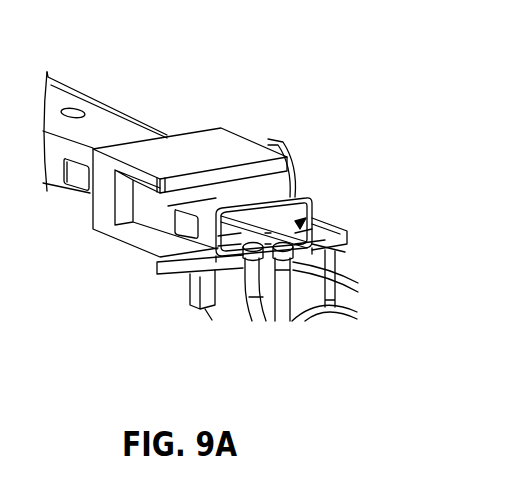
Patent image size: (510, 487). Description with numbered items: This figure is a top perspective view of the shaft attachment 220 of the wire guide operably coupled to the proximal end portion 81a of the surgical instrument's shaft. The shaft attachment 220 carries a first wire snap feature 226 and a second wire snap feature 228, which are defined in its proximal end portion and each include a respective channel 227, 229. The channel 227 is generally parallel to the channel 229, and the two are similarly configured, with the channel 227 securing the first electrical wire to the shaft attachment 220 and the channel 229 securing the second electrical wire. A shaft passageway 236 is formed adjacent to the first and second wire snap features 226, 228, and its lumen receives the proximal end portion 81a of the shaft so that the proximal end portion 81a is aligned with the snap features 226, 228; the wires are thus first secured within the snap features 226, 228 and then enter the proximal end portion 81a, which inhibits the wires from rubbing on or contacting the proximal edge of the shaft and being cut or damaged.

The shaft attachment 220 is at (187, 151).
The proximal end portion 81a is at (307, 198).
The shaft passageway 236 is at (348, 240).
The first wire snap feature 226 is at (294, 258).
The channel 227 is at (279, 276).
The second wire snap feature 228 is at (182, 250).
The channel 229 is at (238, 285).